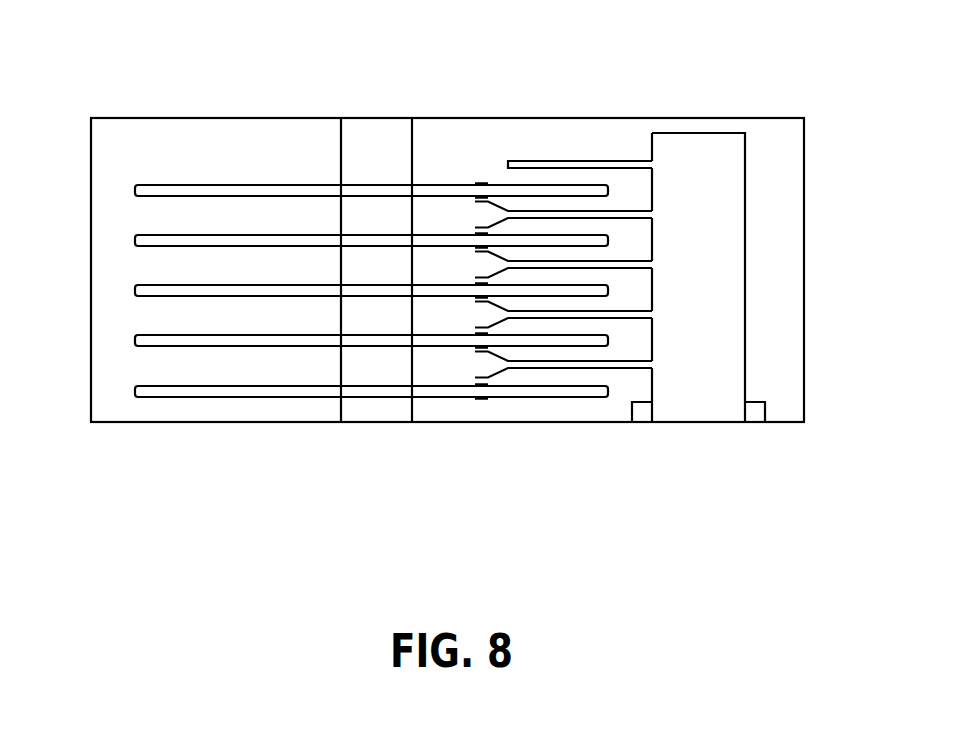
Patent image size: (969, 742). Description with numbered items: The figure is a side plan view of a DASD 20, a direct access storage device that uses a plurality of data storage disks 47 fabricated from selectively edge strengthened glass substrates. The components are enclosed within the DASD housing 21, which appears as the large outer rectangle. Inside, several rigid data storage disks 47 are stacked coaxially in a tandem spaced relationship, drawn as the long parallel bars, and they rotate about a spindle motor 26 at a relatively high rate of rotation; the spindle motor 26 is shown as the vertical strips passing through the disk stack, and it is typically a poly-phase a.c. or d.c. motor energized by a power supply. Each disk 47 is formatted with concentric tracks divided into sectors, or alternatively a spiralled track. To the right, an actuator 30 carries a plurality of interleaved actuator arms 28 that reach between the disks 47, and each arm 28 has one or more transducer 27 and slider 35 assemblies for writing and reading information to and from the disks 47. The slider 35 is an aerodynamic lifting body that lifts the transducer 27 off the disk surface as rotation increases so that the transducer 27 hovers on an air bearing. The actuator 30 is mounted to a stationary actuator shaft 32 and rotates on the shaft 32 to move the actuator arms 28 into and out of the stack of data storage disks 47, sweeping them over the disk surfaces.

The DASD 20 is at (703, 92).
The DASD housing 21 is at (805, 308).
The spindle motor 26 is at (367, 419).
The transducer 27 is at (481, 181).
The actuator arms 28 is at (562, 161).
The actuator 30 is at (697, 393).
The actuator shaft 32 is at (766, 407).
The slider 35 is at (487, 181).
The data storage disks 47 is at (135, 191).